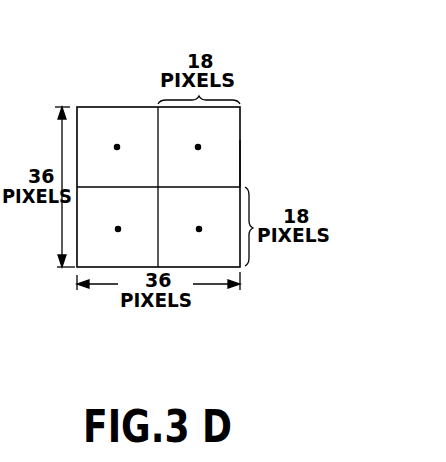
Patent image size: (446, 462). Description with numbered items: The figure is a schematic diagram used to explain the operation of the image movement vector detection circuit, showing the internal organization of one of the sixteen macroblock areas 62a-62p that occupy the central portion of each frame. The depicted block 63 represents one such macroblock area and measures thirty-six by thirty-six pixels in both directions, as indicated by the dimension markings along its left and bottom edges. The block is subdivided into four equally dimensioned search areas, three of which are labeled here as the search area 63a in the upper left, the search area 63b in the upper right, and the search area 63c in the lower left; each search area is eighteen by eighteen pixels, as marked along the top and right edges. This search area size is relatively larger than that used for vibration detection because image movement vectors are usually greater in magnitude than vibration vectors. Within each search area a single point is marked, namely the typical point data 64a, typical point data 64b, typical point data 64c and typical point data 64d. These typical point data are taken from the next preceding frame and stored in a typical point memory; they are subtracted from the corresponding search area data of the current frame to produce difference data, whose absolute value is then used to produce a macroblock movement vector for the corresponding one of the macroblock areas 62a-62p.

The block 63 is at (242, 267).
The search area 63a is at (86, 115).
The search area 63b is at (233, 140).
The search area 63c is at (90, 257).
The typical point data 64a is at (117, 146).
The typical point data 64b is at (199, 146).
The typical point data 64c is at (117, 229).
The typical point data 64d is at (198, 229).
The macroblock areas 62a-62p is at (247, 165).